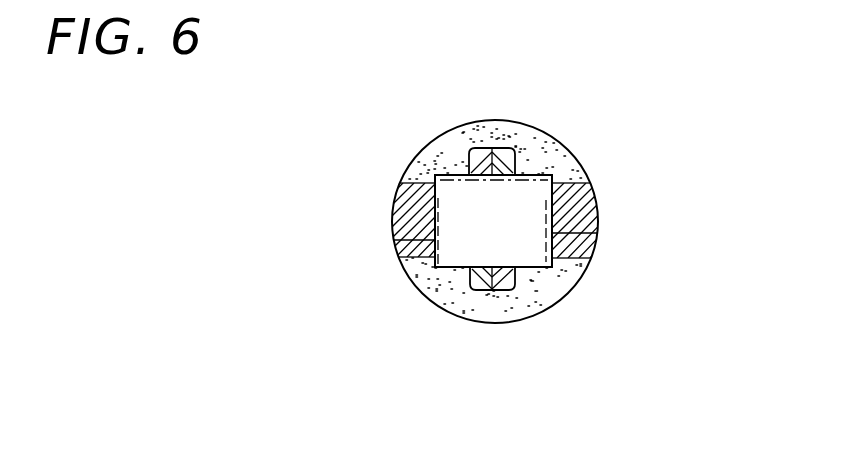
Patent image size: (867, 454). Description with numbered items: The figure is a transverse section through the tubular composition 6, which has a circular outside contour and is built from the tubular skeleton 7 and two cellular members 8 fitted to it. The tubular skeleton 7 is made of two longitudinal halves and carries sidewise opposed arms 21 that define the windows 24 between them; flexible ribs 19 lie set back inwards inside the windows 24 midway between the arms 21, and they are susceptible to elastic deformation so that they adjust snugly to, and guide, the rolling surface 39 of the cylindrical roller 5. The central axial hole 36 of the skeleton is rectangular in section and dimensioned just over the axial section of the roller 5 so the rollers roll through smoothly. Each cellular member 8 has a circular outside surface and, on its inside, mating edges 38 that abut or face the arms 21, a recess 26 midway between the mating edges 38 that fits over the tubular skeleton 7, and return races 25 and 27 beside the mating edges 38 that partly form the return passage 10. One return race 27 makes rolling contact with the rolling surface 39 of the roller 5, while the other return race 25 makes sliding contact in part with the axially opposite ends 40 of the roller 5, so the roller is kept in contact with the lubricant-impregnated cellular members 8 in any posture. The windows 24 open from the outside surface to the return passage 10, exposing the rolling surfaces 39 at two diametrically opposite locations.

The cylindrical roller 5 is at (487, 229).
The tubular composition 6 is at (590, 142).
The tubular skeleton 7 is at (393, 192).
The cellular member 8 is at (565, 165).
The return passage 10 is at (560, 300).
The central axial hole 36 is at (656, 345).
The flexible rib 19 is at (507, 151).
The arm 21 is at (418, 222).
The window 24 is at (422, 180).
The return race 25 is at (455, 140).
The recess 26 is at (513, 150).
The return race 27 is at (460, 183).
The mating edge 38 is at (398, 249).
The rolling surface 39 is at (457, 268).
The axially opposite ends 40 is at (563, 234).